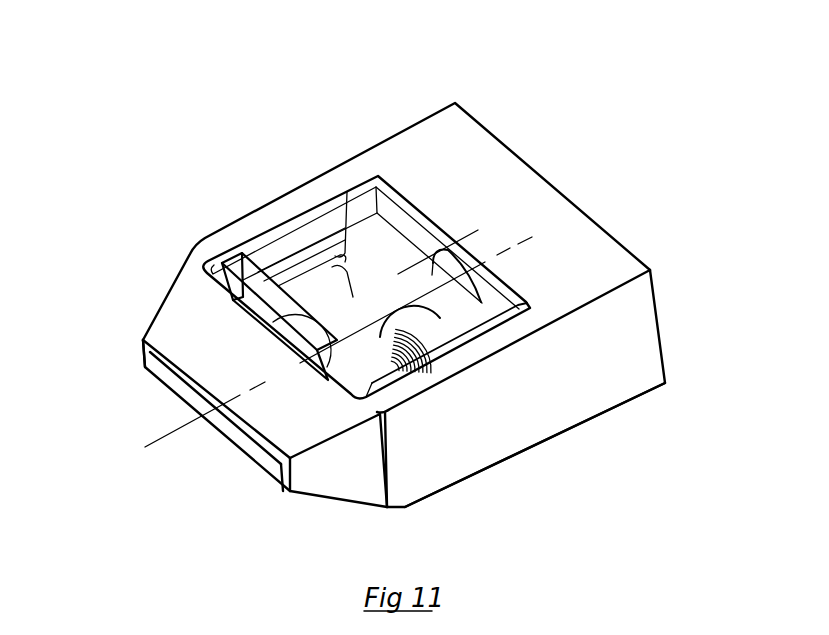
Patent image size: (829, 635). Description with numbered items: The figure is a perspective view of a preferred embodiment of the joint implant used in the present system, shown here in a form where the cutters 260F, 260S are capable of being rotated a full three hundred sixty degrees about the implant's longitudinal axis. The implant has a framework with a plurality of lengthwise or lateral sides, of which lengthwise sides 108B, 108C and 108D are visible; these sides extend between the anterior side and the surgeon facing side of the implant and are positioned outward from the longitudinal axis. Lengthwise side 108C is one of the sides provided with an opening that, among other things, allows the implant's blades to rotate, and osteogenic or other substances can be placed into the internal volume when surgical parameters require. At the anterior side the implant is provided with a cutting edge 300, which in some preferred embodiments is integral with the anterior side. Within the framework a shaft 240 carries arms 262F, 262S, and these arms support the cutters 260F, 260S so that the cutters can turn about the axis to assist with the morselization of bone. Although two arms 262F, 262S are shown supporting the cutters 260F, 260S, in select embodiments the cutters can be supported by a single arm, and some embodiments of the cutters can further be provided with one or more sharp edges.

The lengthwise side 108B is at (590, 404).
The lengthwise side 108C is at (481, 168).
The lengthwise side 108D is at (214, 206).
The shaft 240 is at (386, 299).
The cutter 260F is at (296, 209).
The cutter 260S is at (496, 432).
The arm 262F is at (259, 312).
The arm 262S is at (502, 302).
The cutting edge 300 is at (384, 425).